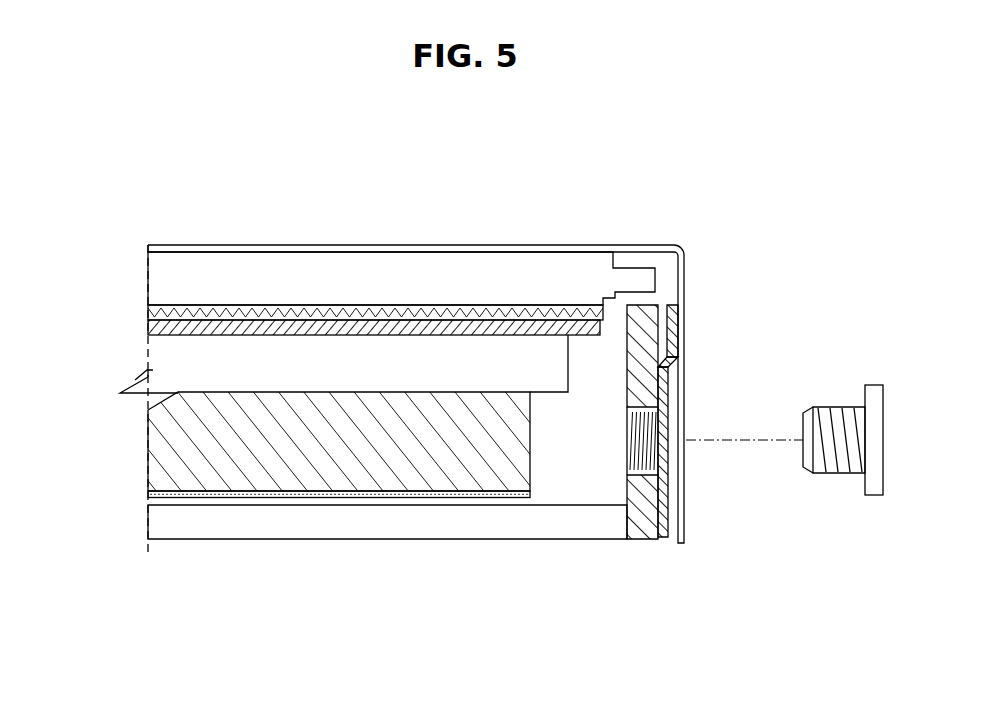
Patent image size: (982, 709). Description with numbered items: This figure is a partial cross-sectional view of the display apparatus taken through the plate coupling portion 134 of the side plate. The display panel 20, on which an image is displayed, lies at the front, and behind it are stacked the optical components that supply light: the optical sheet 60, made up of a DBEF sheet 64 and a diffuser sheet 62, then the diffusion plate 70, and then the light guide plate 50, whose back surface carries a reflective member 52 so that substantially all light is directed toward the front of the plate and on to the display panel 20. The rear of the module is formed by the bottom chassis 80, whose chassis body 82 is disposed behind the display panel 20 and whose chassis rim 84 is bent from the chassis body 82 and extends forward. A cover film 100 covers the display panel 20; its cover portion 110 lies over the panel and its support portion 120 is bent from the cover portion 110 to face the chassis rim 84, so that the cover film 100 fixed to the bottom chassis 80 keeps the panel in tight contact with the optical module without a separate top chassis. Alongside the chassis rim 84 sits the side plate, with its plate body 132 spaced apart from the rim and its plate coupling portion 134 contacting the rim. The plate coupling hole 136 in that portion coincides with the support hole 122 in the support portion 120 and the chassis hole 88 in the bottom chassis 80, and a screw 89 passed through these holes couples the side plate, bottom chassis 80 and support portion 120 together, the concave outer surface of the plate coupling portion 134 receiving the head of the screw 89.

The display panel 20 is at (410, 262).
The light guide plate 50 is at (413, 473).
The reflective member 52 is at (460, 496).
The optical sheet 60 is at (322, 322).
The diffuser sheet 62 is at (344, 337).
The double bright enhancement film sheet 64 is at (150, 312).
The diffusion plate 70 is at (135, 380).
The bottom chassis 80 is at (421, 471).
The chassis body 82 is at (567, 530).
The chassis rim 84 is at (627, 390).
The chassis hole 88 is at (641, 410).
The screw 89 is at (818, 475).
The cover film 100 is at (456, 354).
The cover portion 110 is at (322, 248).
The support portion 120 is at (685, 279).
The support hole 122 is at (685, 484).
The plate body 132 is at (673, 330).
The plate coupling portion 134 is at (668, 380).
The plate coupling hole 136 is at (664, 415).